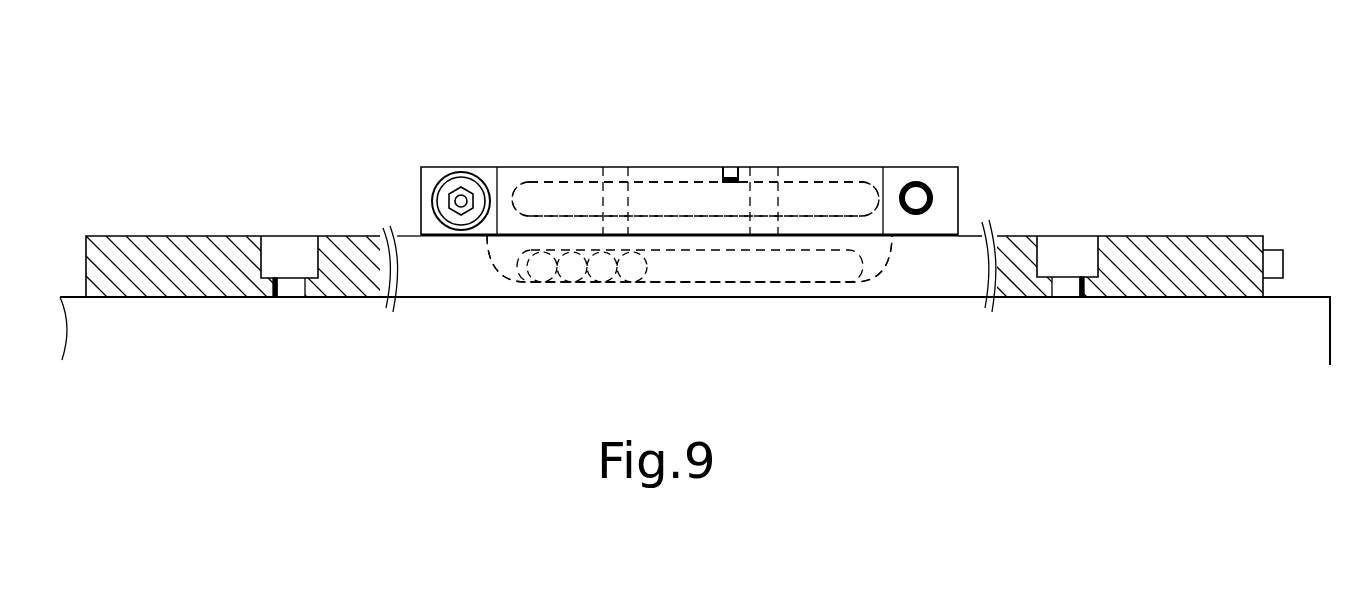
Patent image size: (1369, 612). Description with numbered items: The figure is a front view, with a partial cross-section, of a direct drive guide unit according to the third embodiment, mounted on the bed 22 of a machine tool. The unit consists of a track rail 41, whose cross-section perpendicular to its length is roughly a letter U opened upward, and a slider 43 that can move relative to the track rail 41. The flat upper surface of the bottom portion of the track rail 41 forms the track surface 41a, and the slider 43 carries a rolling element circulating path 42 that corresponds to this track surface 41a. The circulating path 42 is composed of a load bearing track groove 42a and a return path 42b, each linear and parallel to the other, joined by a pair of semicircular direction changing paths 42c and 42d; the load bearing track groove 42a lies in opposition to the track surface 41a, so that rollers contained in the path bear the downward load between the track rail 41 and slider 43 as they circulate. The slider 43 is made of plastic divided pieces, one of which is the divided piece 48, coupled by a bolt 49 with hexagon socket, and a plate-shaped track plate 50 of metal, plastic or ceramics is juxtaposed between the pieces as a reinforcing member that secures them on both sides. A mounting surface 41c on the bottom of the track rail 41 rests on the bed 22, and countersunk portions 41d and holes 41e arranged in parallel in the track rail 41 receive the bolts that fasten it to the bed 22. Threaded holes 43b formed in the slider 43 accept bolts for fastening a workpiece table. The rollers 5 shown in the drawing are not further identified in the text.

The coil elements 5 is at (542, 272).
The bed 22 is at (1335, 312).
The track rail 41 is at (1166, 226).
The track surface 41a is at (409, 235).
The mounting surface 41c is at (1252, 298).
The countersunk portion 41d is at (313, 252).
The hole 41e is at (302, 288).
The rolling element circulating path 42 is at (729, 167).
The load bearing track groove 42a is at (760, 256).
The return path 42b is at (664, 188).
The direction changing path 42c is at (498, 204).
The direction changing path 42d is at (883, 167).
The slider 43 is at (424, 164).
The threaded hole 43b is at (600, 184).
The divided piece 48 is at (878, 192).
The bolt 49 is at (453, 167).
The track plate 50 is at (828, 240).